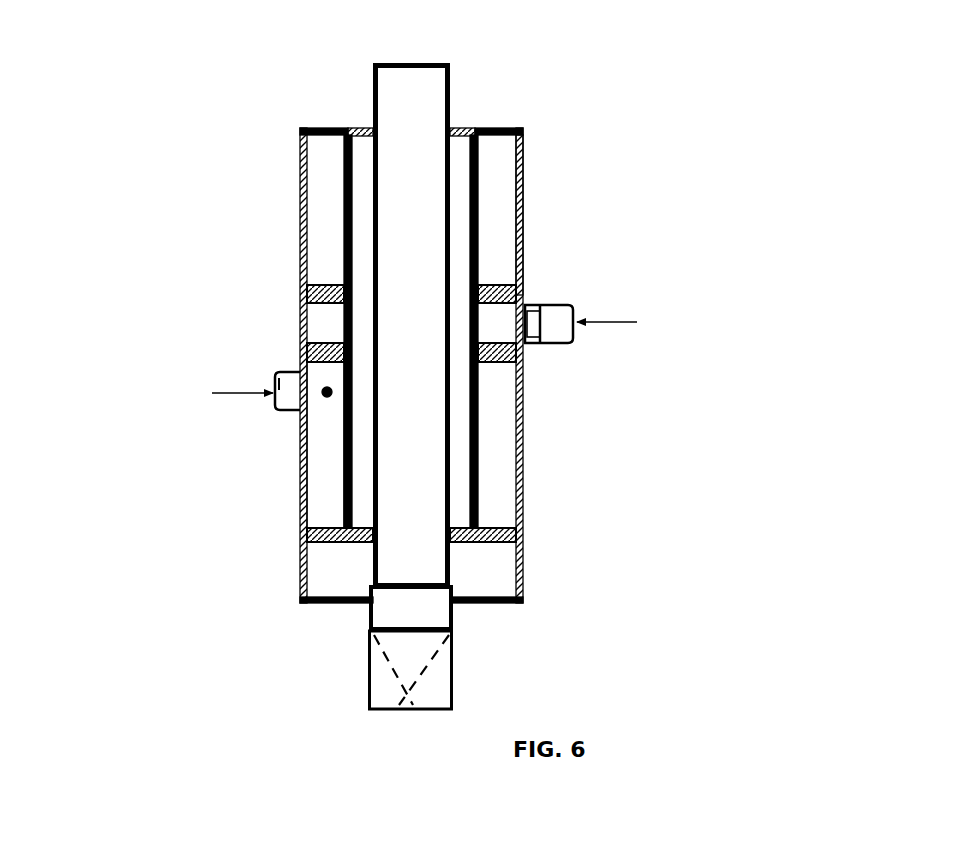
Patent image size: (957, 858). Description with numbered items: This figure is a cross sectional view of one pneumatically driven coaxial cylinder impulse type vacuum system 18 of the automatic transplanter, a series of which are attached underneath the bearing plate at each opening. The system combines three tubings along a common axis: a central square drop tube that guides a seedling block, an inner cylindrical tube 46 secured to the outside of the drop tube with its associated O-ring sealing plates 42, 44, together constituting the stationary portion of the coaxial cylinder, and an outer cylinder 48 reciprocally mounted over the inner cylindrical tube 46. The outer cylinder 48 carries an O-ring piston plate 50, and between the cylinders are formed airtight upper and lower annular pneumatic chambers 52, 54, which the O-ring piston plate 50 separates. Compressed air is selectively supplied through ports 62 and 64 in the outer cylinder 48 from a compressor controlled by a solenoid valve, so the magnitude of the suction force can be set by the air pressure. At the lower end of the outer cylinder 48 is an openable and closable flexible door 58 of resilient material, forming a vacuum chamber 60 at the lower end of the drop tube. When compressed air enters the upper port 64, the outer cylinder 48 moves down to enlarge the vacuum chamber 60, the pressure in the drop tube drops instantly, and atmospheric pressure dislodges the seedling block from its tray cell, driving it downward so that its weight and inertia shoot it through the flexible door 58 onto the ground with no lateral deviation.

The coaxial cylinder impulse type vacuum system 18 is at (650, 212).
The O-ring sealing plate 42 is at (519, 263).
The O-ring sealing plate 44 is at (513, 543).
The inner cylindrical tube 46 is at (477, 185).
The outer cylinder 48 is at (523, 195).
The O-ring piston plate 50 is at (521, 376).
The upper annular pneumatic chamber 52 is at (327, 325).
The lower annular pneumatic chamber 54 is at (317, 468).
The flexible door 58 is at (390, 668).
The vacuum chamber 60 is at (318, 575).
The port 62 is at (287, 402).
The upper port 64 is at (558, 318).